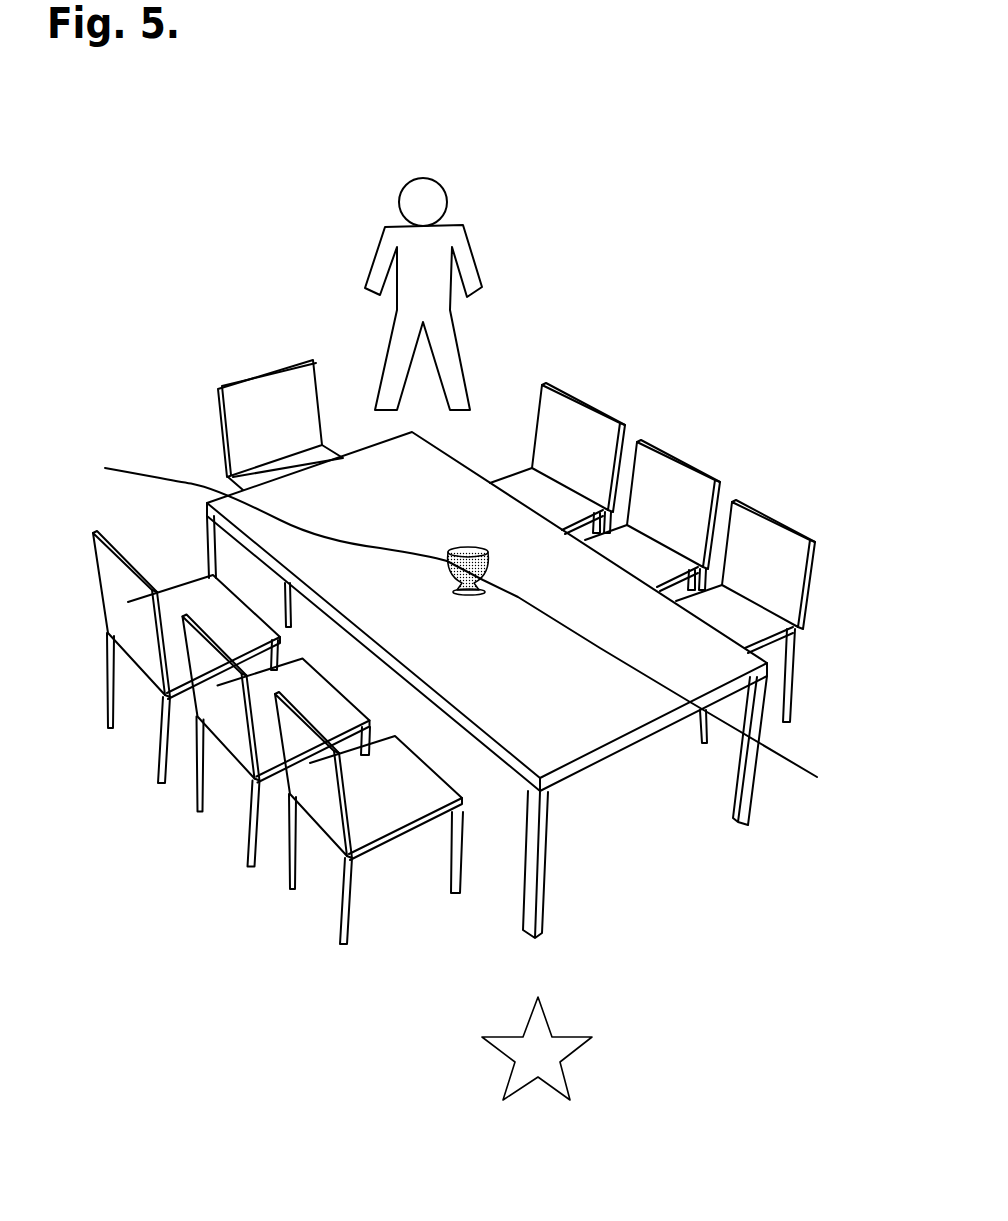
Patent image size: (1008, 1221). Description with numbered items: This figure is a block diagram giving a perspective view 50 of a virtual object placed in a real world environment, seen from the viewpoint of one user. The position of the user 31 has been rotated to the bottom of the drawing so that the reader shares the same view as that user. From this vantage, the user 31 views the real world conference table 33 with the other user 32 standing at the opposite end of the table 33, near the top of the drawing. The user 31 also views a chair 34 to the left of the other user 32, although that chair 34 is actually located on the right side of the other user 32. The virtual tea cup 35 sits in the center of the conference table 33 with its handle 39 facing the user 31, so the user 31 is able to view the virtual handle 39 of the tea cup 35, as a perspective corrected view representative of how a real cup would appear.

The perspective view 50 is at (171, 106).
The user 31 is at (575, 1007).
The other user 32 is at (424, 154).
The conference table 33 is at (640, 747).
The chair 34 is at (808, 560).
The virtual tea cup 35 is at (262, 507).
The handle 39 is at (647, 676).